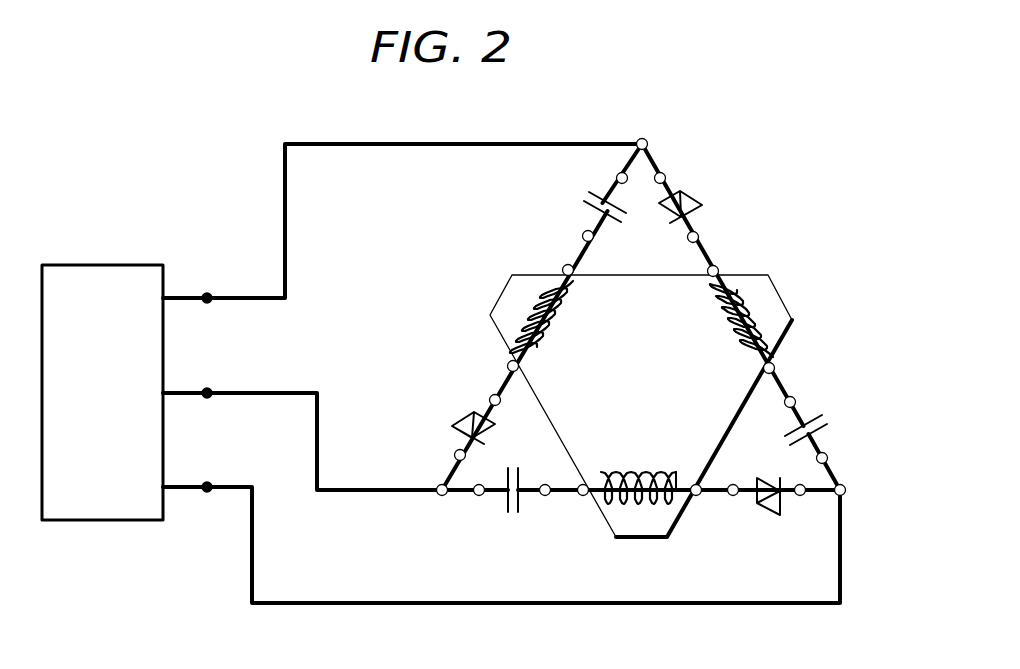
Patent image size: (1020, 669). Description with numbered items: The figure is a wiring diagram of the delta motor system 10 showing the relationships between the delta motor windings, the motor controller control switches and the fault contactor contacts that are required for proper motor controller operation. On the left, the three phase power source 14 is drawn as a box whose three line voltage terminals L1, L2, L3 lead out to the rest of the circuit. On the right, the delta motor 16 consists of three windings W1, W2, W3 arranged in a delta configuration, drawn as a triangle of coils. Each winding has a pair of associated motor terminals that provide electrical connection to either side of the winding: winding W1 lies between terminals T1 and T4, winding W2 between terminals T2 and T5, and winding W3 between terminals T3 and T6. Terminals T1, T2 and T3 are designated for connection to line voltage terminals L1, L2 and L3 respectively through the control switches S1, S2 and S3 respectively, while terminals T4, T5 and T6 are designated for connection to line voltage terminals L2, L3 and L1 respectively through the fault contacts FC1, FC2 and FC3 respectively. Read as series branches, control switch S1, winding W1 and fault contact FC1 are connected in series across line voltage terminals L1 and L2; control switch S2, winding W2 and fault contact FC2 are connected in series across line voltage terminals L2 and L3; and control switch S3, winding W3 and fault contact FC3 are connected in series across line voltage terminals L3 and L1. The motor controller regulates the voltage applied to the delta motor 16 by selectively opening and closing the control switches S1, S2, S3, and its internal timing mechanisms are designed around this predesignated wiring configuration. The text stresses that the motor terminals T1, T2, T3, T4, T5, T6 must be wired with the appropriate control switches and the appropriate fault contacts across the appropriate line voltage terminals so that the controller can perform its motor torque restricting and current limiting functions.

The delta motor system 10 is at (208, 610).
The three phase power source 14 is at (100, 265).
The delta motor 16 is at (779, 294).
The line voltage terminal L1 is at (402, 223).
The line voltage terminal L2 is at (501, 529).
The line voltage terminal L3 is at (302, 425).
The motor terminal T1 is at (716, 269).
The motor terminal T2 is at (696, 496).
The motor terminal T3 is at (511, 366).
The motor terminal T4 is at (772, 368).
The motor terminal T5 is at (583, 496).
The motor terminal T6 is at (566, 269).
The delta motor winding W1 is at (758, 313).
The delta motor winding W2 is at (644, 500).
The delta motor winding W3 is at (532, 316).
The control switch S1 is at (690, 205).
The control switch S2 is at (779, 515).
The control switch S3 is at (473, 423).
The fault contact FC1 is at (824, 431).
The fault contact FC2 is at (506, 501).
The fault contact FC3 is at (601, 196).